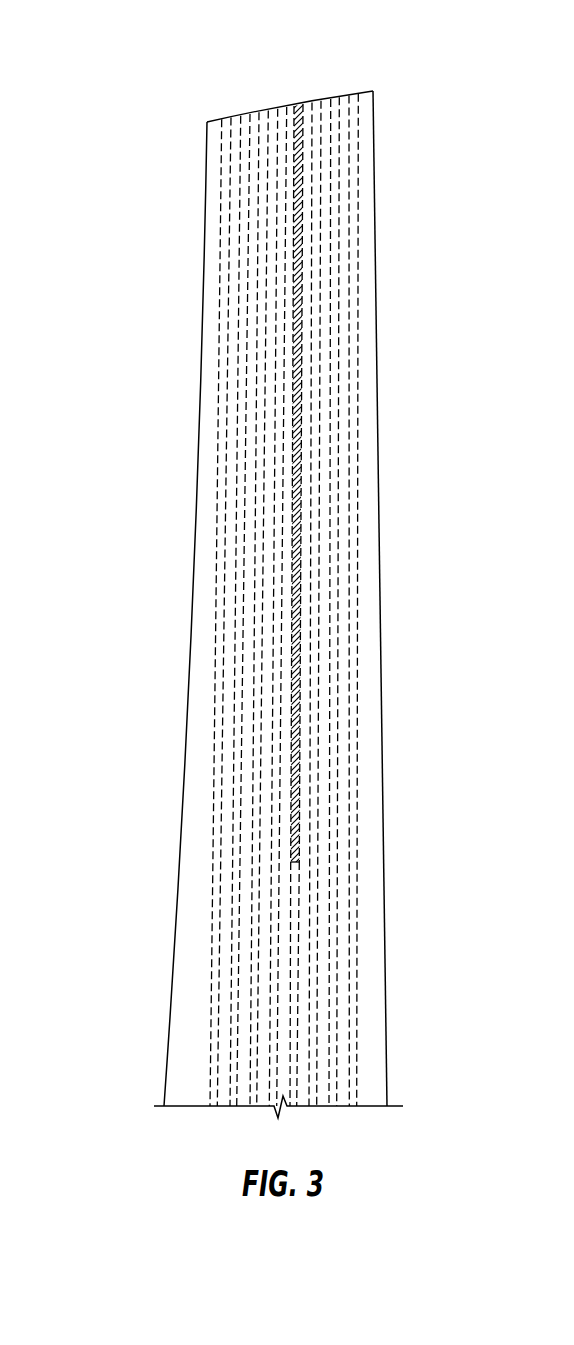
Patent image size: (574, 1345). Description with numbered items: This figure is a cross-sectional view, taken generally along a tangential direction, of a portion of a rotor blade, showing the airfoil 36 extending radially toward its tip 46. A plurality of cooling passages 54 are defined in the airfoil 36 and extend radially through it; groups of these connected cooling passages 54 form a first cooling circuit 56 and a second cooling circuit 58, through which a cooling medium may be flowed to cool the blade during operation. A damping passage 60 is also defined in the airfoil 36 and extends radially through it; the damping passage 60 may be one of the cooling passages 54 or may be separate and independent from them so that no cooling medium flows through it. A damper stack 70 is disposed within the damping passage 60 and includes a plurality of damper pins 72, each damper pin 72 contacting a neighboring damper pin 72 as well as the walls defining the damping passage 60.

The airfoil 36 is at (118, 301).
The tip 46 is at (146, 112).
The cooling passages 54 is at (350, 143).
The first cooling circuit 56 is at (199, 167).
The second cooling circuit 58 is at (374, 180).
The damping passage 60 is at (313, 876).
The damper stack 70 is at (314, 401).
The damper pins 72 is at (302, 328).